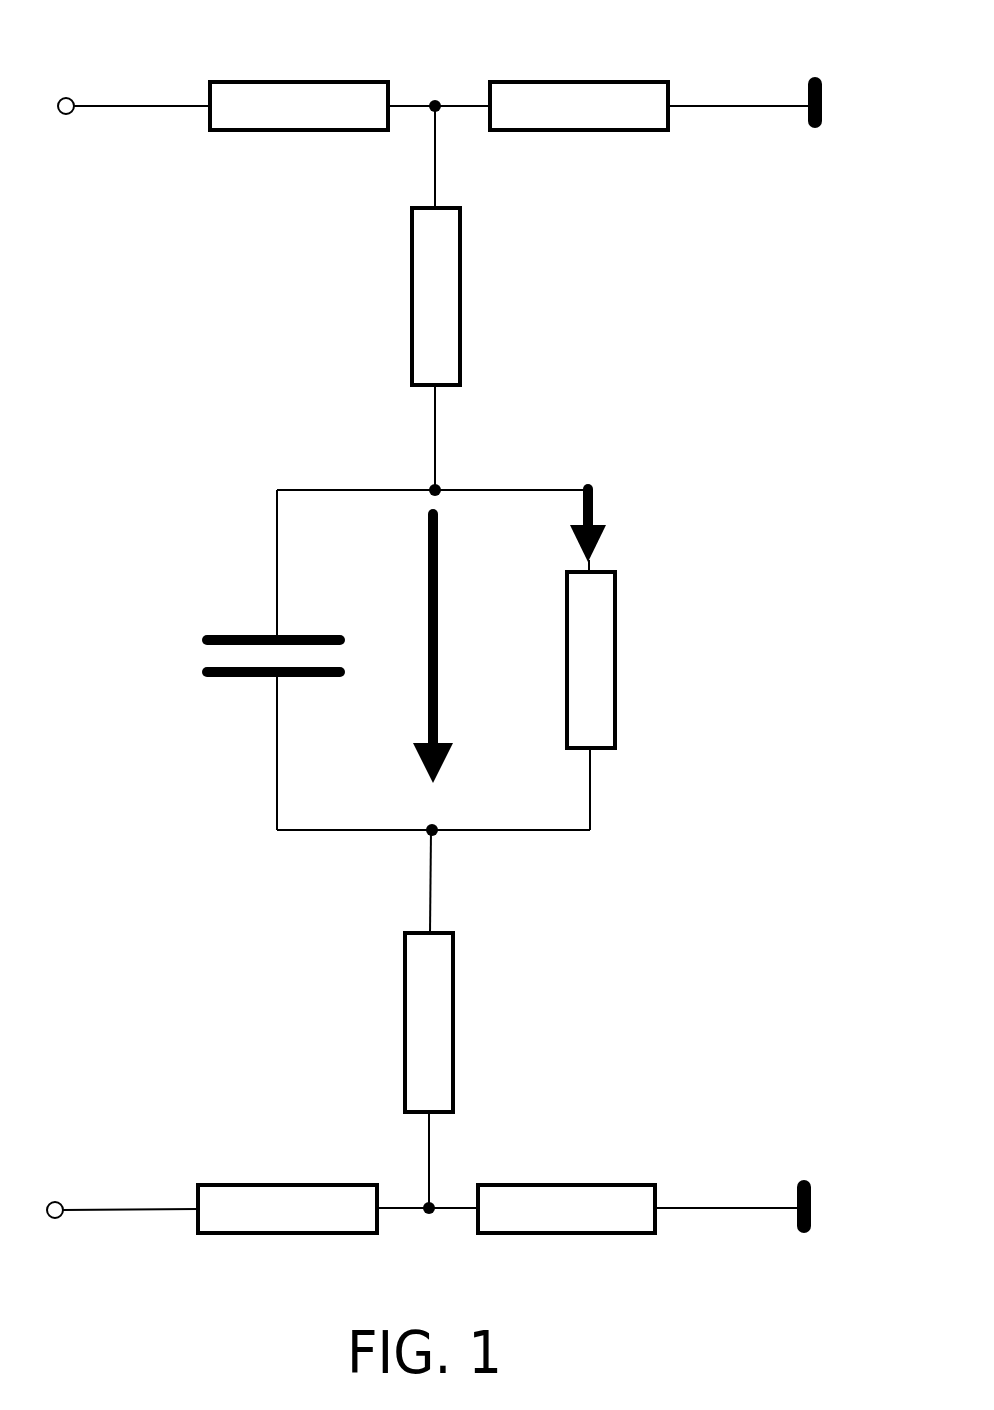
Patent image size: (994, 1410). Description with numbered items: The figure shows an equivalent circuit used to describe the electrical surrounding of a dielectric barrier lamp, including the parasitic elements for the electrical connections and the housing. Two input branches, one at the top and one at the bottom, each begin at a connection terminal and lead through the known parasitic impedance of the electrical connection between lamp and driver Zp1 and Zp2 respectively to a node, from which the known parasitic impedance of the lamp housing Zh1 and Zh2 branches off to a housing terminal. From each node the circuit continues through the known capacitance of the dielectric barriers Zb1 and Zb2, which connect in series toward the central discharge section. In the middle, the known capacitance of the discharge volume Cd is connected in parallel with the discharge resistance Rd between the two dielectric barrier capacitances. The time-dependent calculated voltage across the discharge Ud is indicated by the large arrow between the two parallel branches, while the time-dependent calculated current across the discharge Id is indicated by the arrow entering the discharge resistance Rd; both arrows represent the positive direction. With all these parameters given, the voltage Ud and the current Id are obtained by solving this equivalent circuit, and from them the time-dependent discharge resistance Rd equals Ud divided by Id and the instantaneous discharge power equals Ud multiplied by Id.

The parasitic impedance of the electrical connection between lamp and driver Zp1 is at (274, 85).
The parasitic impedance of the lamp housing Zh1 is at (656, 86).
The capacitance of the dielectric barrier Zb1 is at (470, 298).
The capacitance of the discharge volume Cd is at (247, 660).
The voltage across the discharge Ud is at (447, 648).
The current across the discharge Id is at (609, 519).
The discharge resistance Rd is at (616, 695).
The capacitance of the dielectric barrier Zb2 is at (462, 1019).
The parasitic impedance of the electrical connection between lamp and driver Zp2 is at (262, 1189).
The parasitic impedance of the lamp housing Zh2 is at (644, 1189).